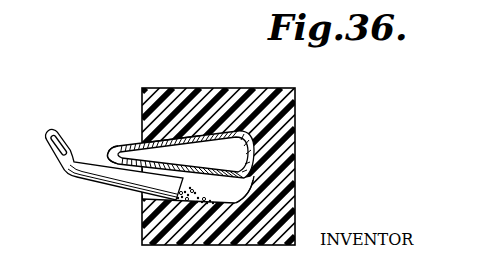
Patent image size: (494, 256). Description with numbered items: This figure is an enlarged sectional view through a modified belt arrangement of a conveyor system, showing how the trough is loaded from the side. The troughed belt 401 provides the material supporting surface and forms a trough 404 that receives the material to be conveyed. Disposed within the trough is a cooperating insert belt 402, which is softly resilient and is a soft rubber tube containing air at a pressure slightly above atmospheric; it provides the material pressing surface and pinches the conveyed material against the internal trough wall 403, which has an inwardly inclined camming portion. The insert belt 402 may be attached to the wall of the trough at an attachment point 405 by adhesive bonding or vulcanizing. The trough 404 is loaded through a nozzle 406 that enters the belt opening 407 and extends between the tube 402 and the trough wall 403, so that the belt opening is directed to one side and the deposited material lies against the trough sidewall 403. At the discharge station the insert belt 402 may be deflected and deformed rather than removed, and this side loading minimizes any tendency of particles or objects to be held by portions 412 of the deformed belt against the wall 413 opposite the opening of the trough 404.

The troughed belt 401 is at (292, 102).
The insert belt 402 is at (118, 146).
The trough wall 403 is at (186, 203).
The trough 404 is at (225, 192).
The attachment point 405 is at (201, 128).
The nozzle 406 is at (93, 177).
The belt opening 407 is at (108, 160).
The portions of the deformed belt 412 is at (250, 168).
The opposite wall 413 is at (246, 190).